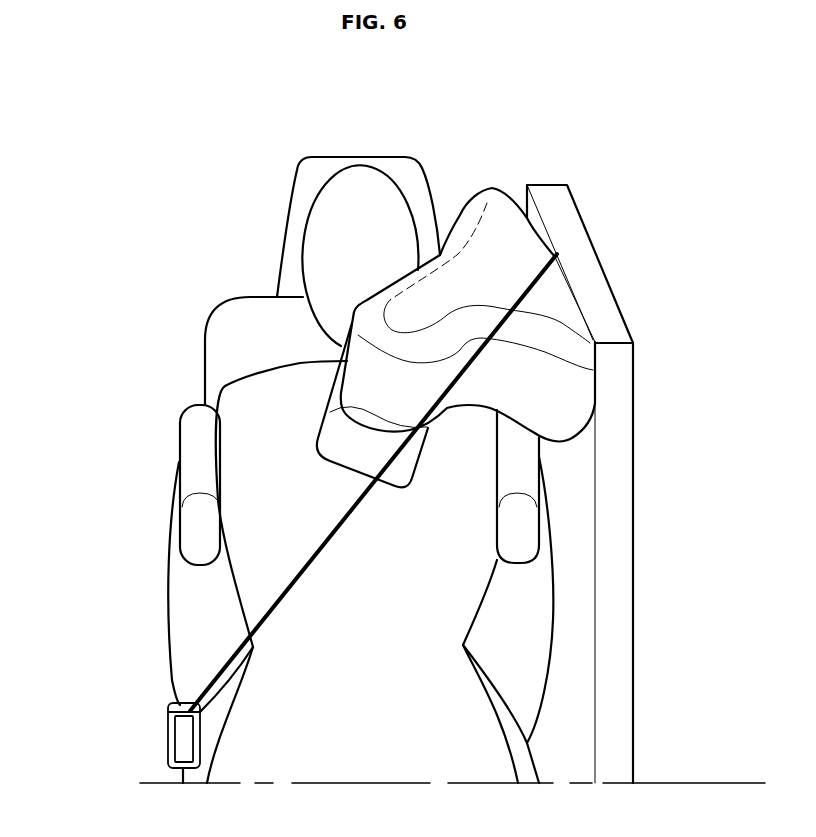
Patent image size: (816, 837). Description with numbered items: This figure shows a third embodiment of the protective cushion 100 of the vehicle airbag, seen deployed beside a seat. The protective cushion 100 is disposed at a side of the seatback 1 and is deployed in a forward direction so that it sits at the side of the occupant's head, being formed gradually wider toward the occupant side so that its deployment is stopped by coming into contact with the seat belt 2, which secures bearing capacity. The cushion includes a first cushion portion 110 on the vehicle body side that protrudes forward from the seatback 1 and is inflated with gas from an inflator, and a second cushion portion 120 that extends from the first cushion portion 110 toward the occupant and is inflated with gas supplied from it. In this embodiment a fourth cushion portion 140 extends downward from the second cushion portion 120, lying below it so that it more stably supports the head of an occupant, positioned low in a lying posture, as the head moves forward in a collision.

The seatback 1 is at (250, 317).
The seat belt 2 is at (295, 574).
The protective cushion 100 is at (488, 185).
The first cushion portion 110 is at (560, 318).
The second cushion portion 120 is at (408, 309).
The fourth cushion portion 140 is at (355, 445).